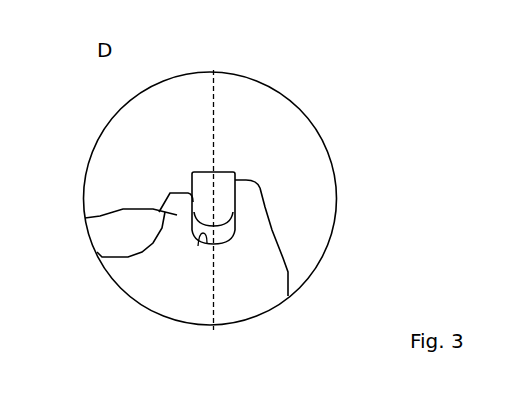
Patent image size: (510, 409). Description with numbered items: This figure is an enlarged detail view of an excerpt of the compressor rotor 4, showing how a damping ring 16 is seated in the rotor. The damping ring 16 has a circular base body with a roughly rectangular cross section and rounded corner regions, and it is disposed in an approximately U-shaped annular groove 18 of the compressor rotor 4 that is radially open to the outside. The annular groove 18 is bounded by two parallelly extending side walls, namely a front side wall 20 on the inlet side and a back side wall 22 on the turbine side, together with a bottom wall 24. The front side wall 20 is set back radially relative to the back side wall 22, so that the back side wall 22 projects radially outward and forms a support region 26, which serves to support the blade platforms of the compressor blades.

The compressor rotor 4 is at (179, 291).
The damping ring 16 is at (225, 178).
The annular groove 18 is at (201, 247).
The front side wall 20 is at (85, 218).
The back side wall 22 is at (250, 212).
The bottom wall 24 is at (227, 246).
The support region 26 is at (260, 182).